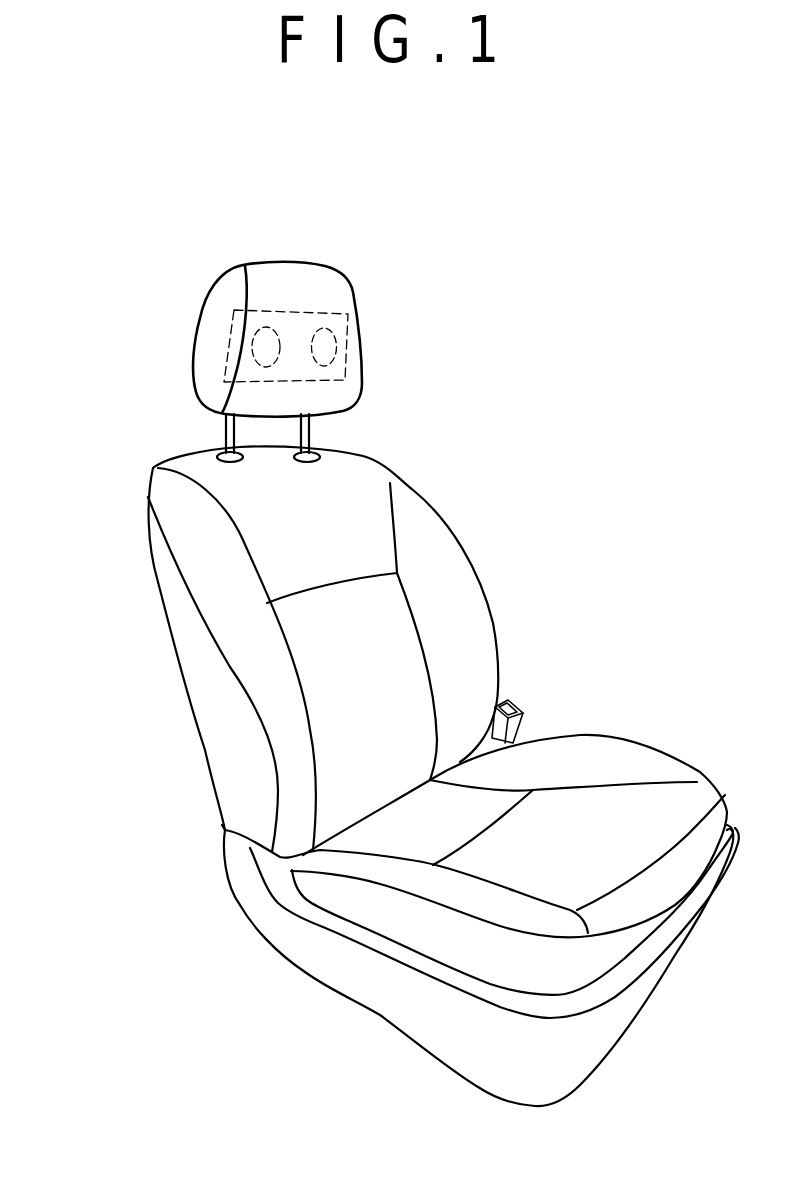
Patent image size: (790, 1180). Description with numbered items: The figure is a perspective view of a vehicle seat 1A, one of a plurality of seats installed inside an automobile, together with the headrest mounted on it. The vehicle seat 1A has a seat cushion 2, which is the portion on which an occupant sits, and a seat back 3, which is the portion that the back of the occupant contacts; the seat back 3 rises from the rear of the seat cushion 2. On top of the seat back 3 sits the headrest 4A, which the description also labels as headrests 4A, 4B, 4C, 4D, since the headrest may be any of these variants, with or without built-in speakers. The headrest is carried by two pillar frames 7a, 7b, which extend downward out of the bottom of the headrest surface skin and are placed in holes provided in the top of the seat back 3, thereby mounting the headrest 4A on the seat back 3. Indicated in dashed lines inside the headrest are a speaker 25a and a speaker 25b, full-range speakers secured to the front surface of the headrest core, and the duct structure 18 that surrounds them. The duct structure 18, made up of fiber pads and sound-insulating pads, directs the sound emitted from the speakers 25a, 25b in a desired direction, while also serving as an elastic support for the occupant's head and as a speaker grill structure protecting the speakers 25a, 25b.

The vehicle seat 1A is at (93, 262).
The seat cushion 2 is at (610, 797).
The seat back 3 is at (388, 637).
The headrest 4A is at (442, 348).
The headrest 4B is at (442, 348).
The headrest 4C is at (442, 348).
The headrest 4D is at (482, 265).
The pillar frame 7a is at (228, 436).
The pillar frame 7b is at (306, 431).
The duct structure 18 is at (298, 323).
The speaker 25a is at (328, 347).
The speaker 25b is at (267, 349).